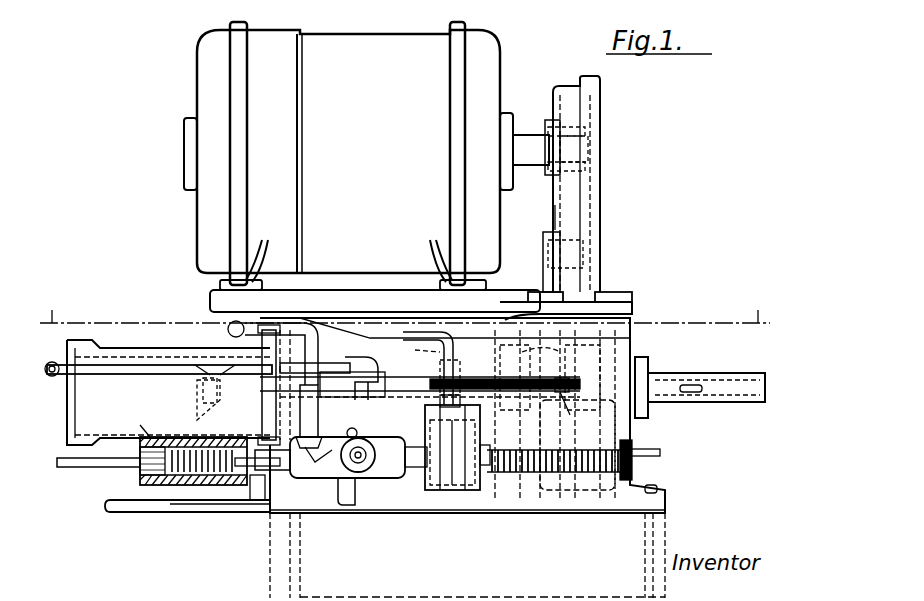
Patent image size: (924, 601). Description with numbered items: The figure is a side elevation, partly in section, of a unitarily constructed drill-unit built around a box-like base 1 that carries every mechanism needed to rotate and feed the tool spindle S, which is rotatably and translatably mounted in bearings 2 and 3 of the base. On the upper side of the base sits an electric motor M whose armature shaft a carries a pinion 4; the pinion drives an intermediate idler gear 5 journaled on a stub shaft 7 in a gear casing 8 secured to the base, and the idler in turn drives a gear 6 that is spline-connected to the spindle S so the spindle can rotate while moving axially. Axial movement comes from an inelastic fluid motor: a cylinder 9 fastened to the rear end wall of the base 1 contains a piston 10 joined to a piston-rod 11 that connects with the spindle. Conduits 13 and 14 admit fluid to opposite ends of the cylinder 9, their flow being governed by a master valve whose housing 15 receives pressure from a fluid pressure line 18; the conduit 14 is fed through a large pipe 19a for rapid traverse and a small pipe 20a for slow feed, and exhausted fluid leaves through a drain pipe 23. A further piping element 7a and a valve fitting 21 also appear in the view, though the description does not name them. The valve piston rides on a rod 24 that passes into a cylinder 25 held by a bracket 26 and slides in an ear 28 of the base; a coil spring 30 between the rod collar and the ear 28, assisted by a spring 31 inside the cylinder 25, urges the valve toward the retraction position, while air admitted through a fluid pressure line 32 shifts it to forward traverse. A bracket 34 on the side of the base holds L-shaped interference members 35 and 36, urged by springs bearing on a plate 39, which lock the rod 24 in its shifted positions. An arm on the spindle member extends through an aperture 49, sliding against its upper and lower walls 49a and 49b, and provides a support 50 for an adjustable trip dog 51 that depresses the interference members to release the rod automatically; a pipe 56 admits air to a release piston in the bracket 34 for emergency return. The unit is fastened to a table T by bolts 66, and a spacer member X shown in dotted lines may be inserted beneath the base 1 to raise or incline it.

The electric motor M is at (348, 156).
The armature shaft a is at (531, 150).
The base 1 is at (516, 500).
The bearing 2 is at (405, 331).
The bearing 3 is at (618, 350).
The pinion 4 is at (595, 117).
The intermediate idler gear 5 is at (602, 222).
The gear 6 is at (633, 318).
The stub shaft 7 is at (575, 258).
The gear casing 8 is at (553, 222).
The cylinder 9 is at (160, 356).
The piston 10 is at (205, 422).
The piston-rod 11 is at (319, 420).
The fluid pressure conduit 13 is at (285, 330).
The fluid pressure conduit 14 is at (148, 372).
The valve housing 15 is at (341, 466).
The fluid pressure line 18 is at (208, 512).
The pipe 19a is at (430, 395).
The pipe 20a is at (350, 380).
The valve knob 21 is at (362, 468).
The drain pipe 23 is at (143, 512).
The rod 24 is at (252, 488).
The cylinder 25 is at (138, 427).
The bracket 26 is at (256, 500).
The ear 28 is at (636, 470).
The coil spring 30 is at (575, 462).
The spring 31 is at (190, 474).
The fluid pressure line 32 is at (100, 468).
The bracket 34 is at (430, 492).
The interference member 35 is at (468, 492).
The interference member 36 is at (445, 495).
The plate 39 is at (413, 347).
The aperture 49 is at (420, 387).
The upper wall 49a is at (412, 372).
The lower wall 49b is at (426, 410).
The support 50 is at (552, 400).
The trip dog 51 is at (573, 412).
The pipe 56 is at (428, 359).
The bolt 66 is at (300, 576).
The pipe 7a is at (273, 383).
The spindle S is at (704, 403).
The table T is at (113, 588).
The spacer member X is at (270, 577).